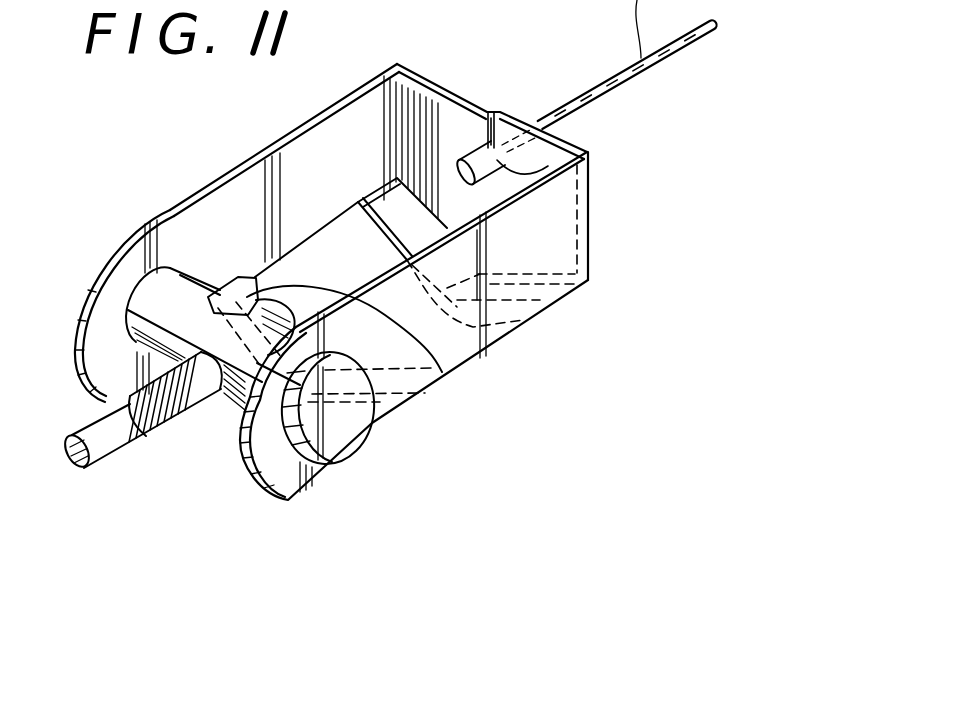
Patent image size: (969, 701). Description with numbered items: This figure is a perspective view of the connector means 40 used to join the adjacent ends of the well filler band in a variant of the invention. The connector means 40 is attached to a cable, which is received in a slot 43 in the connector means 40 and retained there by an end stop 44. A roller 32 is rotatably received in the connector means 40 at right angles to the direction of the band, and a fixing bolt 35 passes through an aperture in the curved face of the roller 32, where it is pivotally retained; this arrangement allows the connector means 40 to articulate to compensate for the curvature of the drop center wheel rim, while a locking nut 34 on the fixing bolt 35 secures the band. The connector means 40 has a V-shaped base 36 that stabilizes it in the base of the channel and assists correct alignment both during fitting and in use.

The connector means 40 is at (258, 170).
The end stop 44 is at (579, 157).
The slot 43 is at (496, 117).
The locking nut 34 is at (209, 292).
The fixing bolt 35 is at (122, 447).
The roller 32 is at (338, 435).
The V-shaped base 36 is at (507, 322).